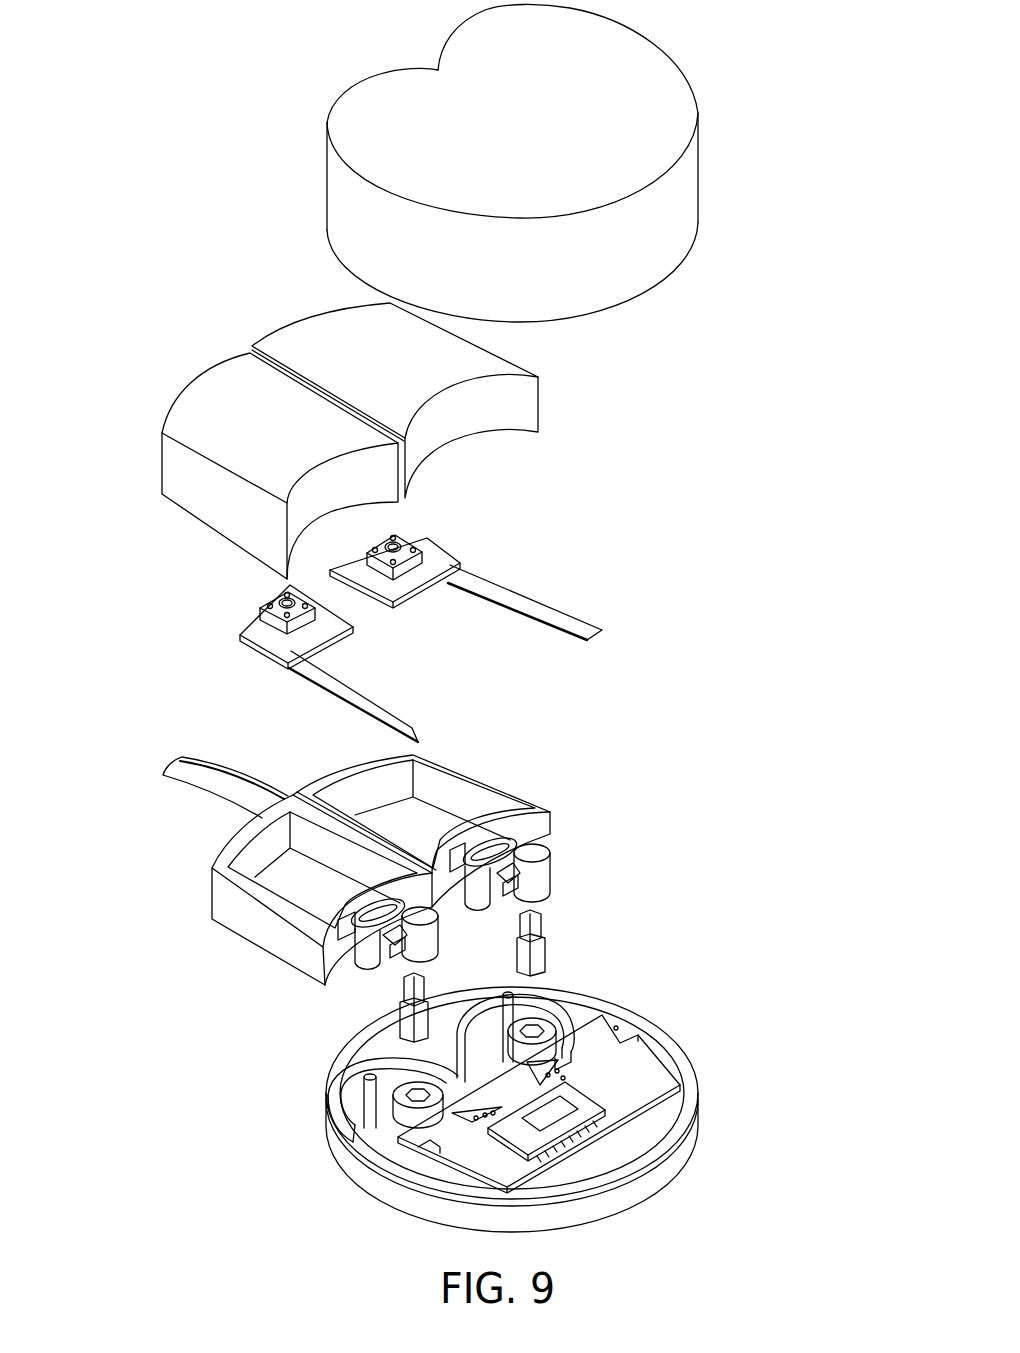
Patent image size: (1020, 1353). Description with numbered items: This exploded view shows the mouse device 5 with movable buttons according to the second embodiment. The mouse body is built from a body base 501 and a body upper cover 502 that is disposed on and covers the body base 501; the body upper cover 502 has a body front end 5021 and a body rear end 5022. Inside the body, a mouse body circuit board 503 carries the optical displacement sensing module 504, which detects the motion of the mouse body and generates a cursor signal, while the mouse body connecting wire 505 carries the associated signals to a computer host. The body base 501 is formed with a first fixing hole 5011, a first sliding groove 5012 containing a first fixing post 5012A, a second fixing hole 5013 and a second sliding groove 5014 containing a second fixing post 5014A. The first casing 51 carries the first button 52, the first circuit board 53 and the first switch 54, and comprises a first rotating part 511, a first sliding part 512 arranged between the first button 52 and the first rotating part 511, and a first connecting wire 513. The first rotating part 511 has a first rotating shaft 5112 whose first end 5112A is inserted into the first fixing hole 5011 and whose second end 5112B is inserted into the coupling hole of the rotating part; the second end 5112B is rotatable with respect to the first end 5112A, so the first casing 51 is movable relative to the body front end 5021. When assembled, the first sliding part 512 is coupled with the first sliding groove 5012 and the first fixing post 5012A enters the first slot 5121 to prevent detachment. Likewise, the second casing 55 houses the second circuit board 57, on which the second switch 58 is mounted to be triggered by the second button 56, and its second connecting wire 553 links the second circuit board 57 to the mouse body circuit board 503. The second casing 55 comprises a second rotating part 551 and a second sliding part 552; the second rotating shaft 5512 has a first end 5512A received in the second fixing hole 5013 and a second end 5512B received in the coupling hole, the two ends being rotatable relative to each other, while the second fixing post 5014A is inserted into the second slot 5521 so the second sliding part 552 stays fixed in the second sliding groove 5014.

The mouse device 5 is at (138, 42).
The body upper cover 502 is at (630, 60).
The body front end 5021 is at (402, 88).
The body rear end 5022 is at (602, 187).
The first button 52 is at (215, 407).
The second button 56 is at (345, 333).
The second circuit board 57 is at (433, 563).
The second switch 58 is at (392, 545).
The second connecting wire 553 is at (520, 600).
The first circuit board 53 is at (265, 642).
The first switch 54 is at (282, 598).
The first connecting wire 513 is at (343, 693).
The mouse body connecting wire 505 is at (207, 770).
The first casing 51 is at (260, 847).
The first sliding part 512 is at (361, 947).
The first slot 5121 is at (370, 922).
The first rotating part 511 is at (405, 945).
The first rotating shaft 5112 is at (387, 997).
The first end of the first rotating shaft 5112A is at (410, 1025).
The second end of the first rotating shaft 5112B is at (420, 980).
The second casing 55 is at (440, 785).
The second sliding part 552 is at (487, 840).
The second slot 5521 is at (500, 848).
The second rotating part 551 is at (533, 857).
The second rotating shaft 5512 is at (558, 930).
The first end of the second rotating shaft 5512A is at (525, 958).
The second end of the second rotating shaft 5512B is at (540, 912).
The body base 501 is at (660, 1132).
The first fixing hole 5011 is at (412, 1102).
The first sliding groove 5012 is at (352, 1127).
The first fixing post 5012A is at (372, 1133).
The second fixing hole 5013 is at (550, 1027).
The second sliding groove 5014 is at (545, 1003).
The second fixing post 5014A is at (502, 1003).
The mouse body circuit board 503 is at (617, 1103).
The optical displacement sensing module 504 is at (573, 1115).